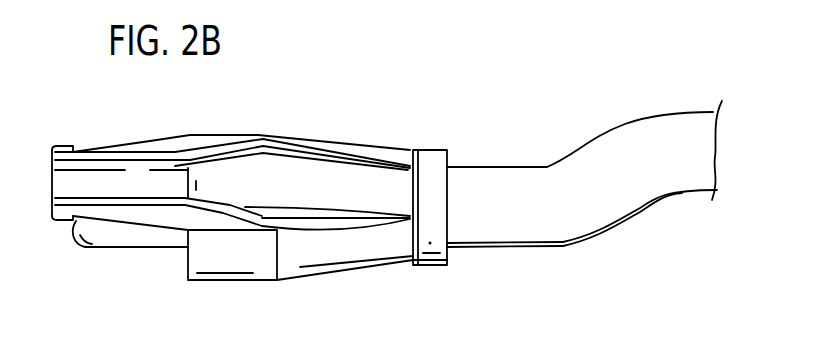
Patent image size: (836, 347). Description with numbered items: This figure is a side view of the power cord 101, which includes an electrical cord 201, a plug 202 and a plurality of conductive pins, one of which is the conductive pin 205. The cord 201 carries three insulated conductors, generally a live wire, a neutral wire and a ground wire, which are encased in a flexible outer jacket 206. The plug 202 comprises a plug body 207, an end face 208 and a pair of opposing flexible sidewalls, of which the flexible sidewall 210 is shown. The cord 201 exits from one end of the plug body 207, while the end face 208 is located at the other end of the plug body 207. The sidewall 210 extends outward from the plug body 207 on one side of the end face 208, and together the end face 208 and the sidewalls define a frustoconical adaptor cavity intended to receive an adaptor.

The power cord 101 is at (336, 97).
The electrical cord 201 is at (545, 165).
The plug 202 is at (348, 142).
The conductive pin 205 is at (105, 237).
The flexible outer jacket 206 is at (468, 192).
The plug body 207 is at (297, 190).
The end face 208 is at (188, 262).
The flexible sidewall 210 is at (100, 184).